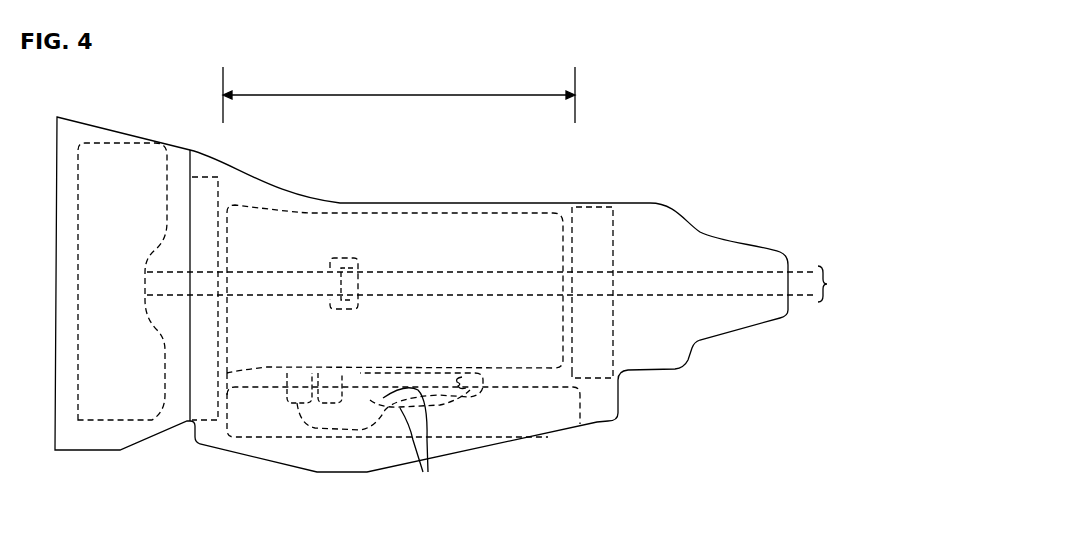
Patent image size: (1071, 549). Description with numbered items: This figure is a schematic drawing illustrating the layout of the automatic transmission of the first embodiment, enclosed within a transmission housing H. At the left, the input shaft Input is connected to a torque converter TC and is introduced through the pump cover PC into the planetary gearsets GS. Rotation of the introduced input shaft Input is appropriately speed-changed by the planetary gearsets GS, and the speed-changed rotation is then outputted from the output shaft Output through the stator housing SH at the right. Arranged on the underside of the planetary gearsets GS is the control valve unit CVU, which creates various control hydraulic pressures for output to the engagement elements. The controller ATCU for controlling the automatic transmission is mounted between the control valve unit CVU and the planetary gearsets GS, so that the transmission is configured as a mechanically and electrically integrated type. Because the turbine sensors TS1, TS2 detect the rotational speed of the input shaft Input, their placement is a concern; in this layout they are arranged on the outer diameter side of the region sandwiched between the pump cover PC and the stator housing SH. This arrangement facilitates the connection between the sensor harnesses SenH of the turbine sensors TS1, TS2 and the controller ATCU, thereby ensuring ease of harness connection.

The torque converter TC is at (107, 143).
The pump cover PC is at (207, 176).
The input shaft Input is at (248, 270).
The transmission housing H is at (360, 200).
The planetary gearsets GS is at (420, 213).
The stator housing SH is at (590, 207).
The output shaft Output is at (697, 272).
The turbine sensor TS2 is at (289, 403).
The turbine sensor TS1 is at (327, 400).
The controller ATCU is at (387, 378).
The sensor harnesses SenH is at (428, 472).
The control valve unit CVU is at (552, 418).